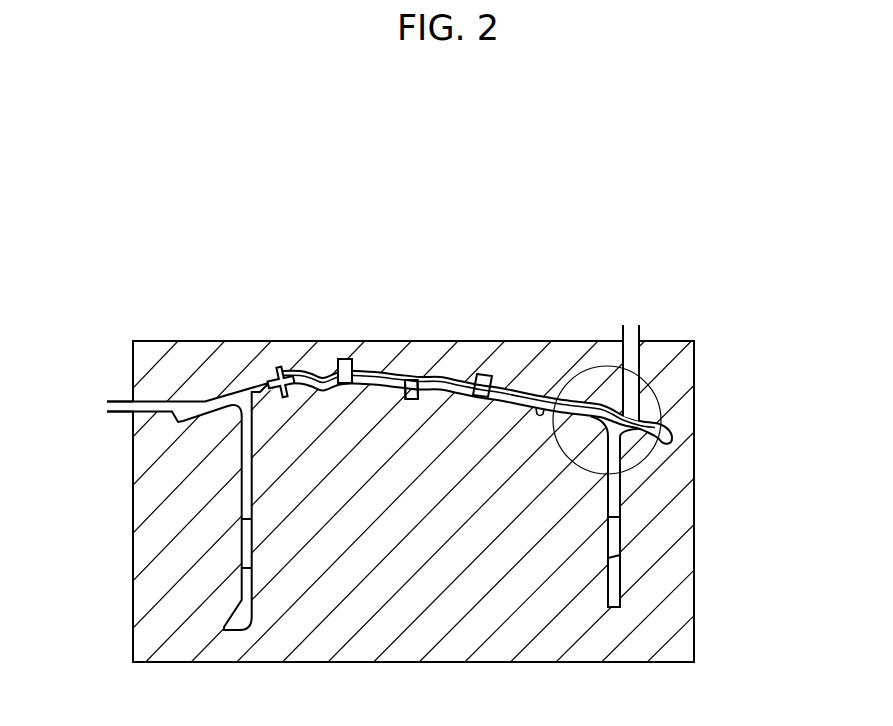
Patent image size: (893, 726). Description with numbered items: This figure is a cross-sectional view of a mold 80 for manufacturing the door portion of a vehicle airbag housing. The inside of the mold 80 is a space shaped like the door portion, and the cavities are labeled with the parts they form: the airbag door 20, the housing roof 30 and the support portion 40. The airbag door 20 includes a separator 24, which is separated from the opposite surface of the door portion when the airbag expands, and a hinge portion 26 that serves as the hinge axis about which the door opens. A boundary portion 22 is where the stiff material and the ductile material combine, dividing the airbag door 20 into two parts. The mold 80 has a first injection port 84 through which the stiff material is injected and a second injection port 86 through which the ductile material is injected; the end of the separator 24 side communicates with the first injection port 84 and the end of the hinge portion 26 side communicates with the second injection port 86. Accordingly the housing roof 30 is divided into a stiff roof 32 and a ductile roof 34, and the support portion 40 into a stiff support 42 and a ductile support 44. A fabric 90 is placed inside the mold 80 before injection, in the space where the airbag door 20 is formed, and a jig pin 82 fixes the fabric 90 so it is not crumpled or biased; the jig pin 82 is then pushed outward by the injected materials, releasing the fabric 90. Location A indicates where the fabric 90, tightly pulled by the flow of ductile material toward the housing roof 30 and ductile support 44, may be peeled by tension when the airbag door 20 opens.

The mold 80 is at (310, 332).
The airbag door 20 is at (402, 375).
The boundary portion 22 is at (467, 428).
The separator 24 is at (274, 367).
The hinge portion 26 is at (601, 402).
The housing roof 30 is at (408, 505).
The stiff roof 32 is at (199, 408).
The ductile roof 34 is at (660, 447).
The support portion 40 is at (410, 535).
The stiff support 42 is at (243, 490).
The ductile support 44 is at (615, 573).
The jig pin 82 is at (344, 358).
The first injection port 84 is at (121, 394).
The second injection port 86 is at (642, 335).
The fabric 90 is at (405, 380).
The location A is at (653, 387).